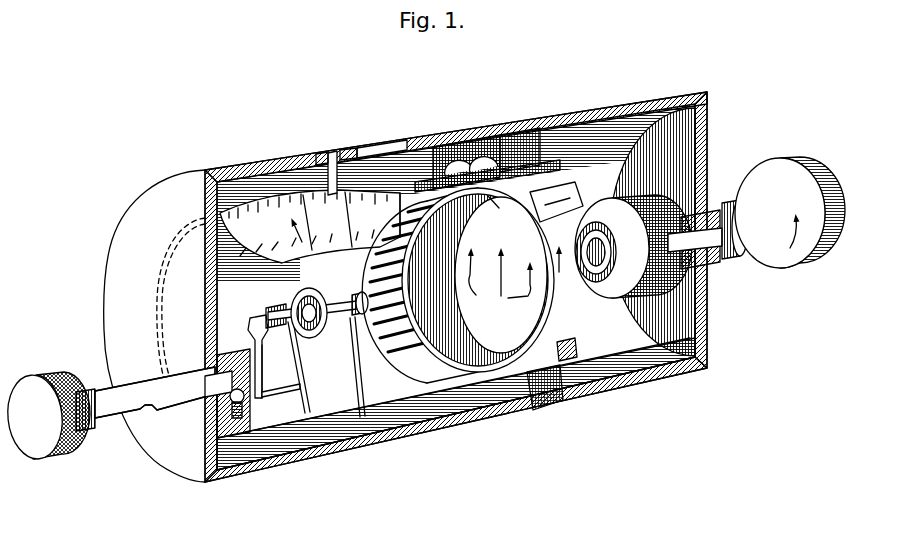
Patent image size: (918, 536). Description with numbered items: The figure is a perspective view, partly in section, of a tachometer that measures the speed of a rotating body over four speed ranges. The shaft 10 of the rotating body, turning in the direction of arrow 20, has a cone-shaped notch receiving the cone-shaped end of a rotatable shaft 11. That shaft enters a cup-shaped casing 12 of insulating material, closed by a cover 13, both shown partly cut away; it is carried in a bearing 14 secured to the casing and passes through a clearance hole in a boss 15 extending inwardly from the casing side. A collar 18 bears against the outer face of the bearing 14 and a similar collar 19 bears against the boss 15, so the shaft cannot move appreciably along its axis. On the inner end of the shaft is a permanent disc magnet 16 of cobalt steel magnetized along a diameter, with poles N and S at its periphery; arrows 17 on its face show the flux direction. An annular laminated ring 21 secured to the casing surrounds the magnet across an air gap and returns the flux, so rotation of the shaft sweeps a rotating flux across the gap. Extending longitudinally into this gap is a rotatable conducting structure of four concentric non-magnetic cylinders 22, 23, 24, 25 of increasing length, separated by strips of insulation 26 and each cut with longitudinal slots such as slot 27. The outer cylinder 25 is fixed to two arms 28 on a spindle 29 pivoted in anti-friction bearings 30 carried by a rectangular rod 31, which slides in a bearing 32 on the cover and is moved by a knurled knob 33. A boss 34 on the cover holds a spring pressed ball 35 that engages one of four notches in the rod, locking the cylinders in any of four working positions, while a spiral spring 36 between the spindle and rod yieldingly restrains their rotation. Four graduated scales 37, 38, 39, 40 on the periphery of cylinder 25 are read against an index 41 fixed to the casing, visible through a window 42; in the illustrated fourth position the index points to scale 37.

The shaft 10 is at (790, 212).
The rotatable shaft 11 is at (756, 212).
The cup-shaped casing 12 is at (692, 94).
The cover 13 is at (216, 172).
The bearing 14 is at (708, 256).
The boss 15 is at (633, 246).
The permanent disc magnet 16 is at (496, 266).
The arrows 17 is at (500, 283).
The collar 18 is at (732, 202).
The collar 19 is at (597, 230).
The arrow 20 is at (793, 239).
The annular laminated ring 21 is at (540, 410).
The cylinder 22 is at (500, 210).
The cylinder 23 is at (458, 285).
The cylinder 24 is at (368, 301).
The cylinder 25 is at (290, 305).
The strips of insulation 26 is at (578, 355).
The slot 27 is at (558, 215).
The arms 28 is at (308, 394).
The spindle 29 is at (290, 312).
The anti-friction bearings 30 is at (256, 316).
The rectangular rod 31 is at (263, 360).
The bearing 32 is at (266, 394).
The knurled knob 33 is at (109, 414).
The boss 34 is at (229, 352).
The spring pressed ball 35 is at (244, 400).
The spiral spring 36 is at (306, 288).
The graduated scale 37 is at (394, 205).
The graduated scale 38 is at (392, 215).
The graduated scale 39 is at (327, 222).
The graduated scale 40 is at (310, 226).
The index 41 is at (333, 152).
The window 42 is at (380, 140).